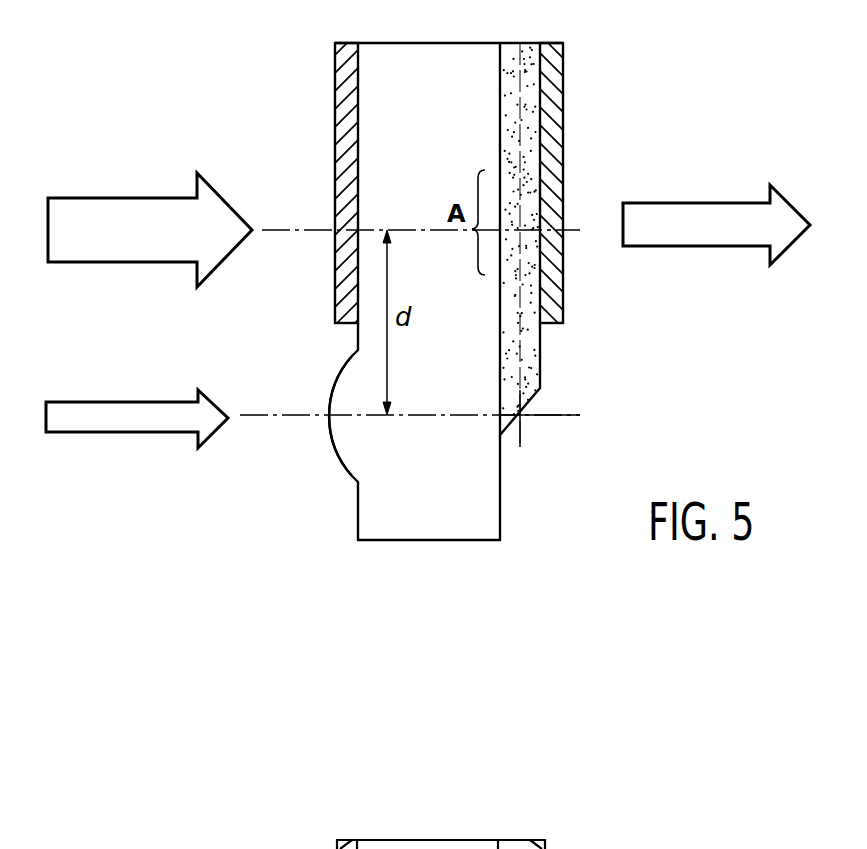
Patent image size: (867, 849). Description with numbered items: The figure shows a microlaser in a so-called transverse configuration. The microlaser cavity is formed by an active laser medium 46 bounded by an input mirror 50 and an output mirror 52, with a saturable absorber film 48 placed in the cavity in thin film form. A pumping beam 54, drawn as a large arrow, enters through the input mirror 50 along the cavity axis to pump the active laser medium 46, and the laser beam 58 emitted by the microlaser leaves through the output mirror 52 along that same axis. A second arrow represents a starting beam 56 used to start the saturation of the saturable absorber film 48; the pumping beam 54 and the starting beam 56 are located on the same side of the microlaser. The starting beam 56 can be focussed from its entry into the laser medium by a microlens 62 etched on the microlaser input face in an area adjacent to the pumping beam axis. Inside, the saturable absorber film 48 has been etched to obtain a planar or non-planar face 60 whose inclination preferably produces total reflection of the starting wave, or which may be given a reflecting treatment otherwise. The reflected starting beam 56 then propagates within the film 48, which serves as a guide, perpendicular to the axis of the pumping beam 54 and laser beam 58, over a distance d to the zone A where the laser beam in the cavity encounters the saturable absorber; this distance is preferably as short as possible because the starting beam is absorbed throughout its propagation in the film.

The active laser medium 46 is at (447, 538).
The saturable absorber film 48 is at (523, 60).
The input mirror 50 is at (342, 90).
The output mirror 52 is at (553, 80).
The pumping beam 54 is at (135, 205).
The starting beam 56 is at (147, 422).
The laser beam 58 is at (700, 210).
The etched face 60 is at (526, 413).
The microlens 62 is at (334, 450).